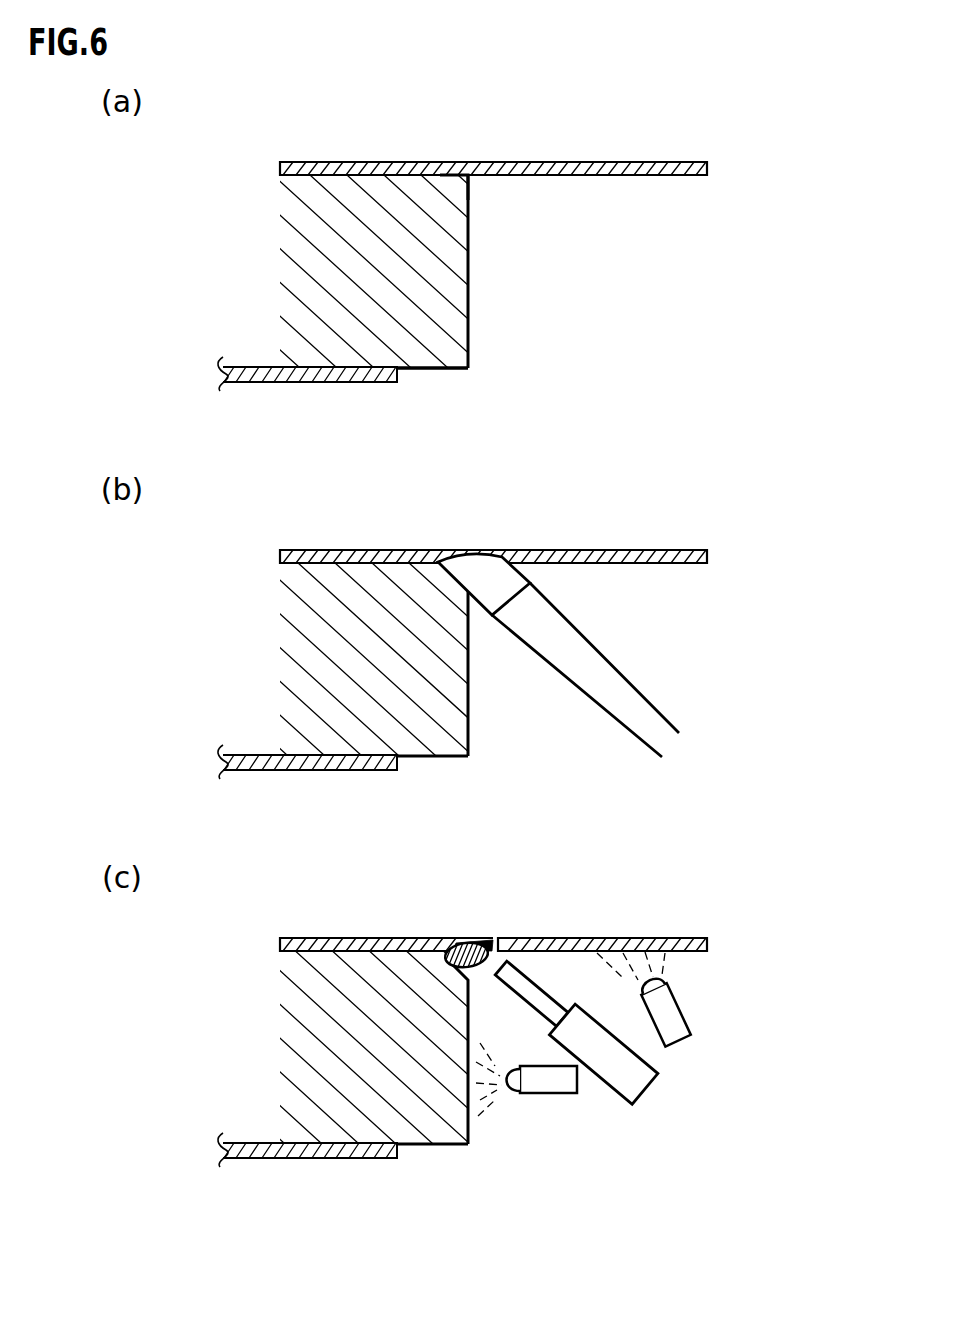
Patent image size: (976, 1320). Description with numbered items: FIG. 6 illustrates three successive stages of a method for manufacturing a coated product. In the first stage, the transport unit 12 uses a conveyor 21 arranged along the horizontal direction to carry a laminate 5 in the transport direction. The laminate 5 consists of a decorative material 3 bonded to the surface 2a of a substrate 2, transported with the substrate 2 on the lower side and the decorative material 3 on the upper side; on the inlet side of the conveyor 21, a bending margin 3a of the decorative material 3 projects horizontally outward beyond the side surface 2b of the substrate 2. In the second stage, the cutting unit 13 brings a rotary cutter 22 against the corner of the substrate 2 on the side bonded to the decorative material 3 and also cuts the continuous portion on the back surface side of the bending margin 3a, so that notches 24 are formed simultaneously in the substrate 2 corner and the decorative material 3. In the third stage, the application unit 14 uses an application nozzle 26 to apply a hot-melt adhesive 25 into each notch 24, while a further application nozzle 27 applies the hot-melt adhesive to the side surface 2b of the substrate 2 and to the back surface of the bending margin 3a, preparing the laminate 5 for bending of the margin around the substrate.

The substrate 2 is at (295, 206).
The surface of the substrate 2a is at (404, 175).
The side surface of the substrate 2b is at (468, 233).
The decorative material 3 is at (317, 161).
The bending margin 3a is at (548, 163).
The laminate 5 is at (272, 253).
The transport unit 12 is at (367, 399).
The cutting unit 13 is at (609, 648).
The application unit 14 is at (619, 1054).
The conveyor 21 is at (299, 382).
The rotary cutter 22 is at (549, 720).
The notch 24 is at (465, 582).
The hot-melt adhesive 25 is at (464, 944).
The application nozzle 26 is at (617, 1093).
The application nozzle 27 is at (690, 1009).